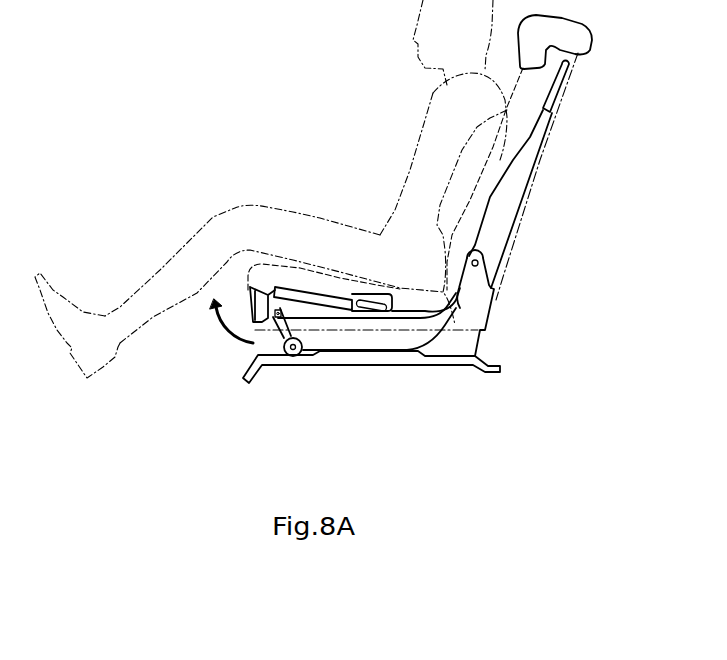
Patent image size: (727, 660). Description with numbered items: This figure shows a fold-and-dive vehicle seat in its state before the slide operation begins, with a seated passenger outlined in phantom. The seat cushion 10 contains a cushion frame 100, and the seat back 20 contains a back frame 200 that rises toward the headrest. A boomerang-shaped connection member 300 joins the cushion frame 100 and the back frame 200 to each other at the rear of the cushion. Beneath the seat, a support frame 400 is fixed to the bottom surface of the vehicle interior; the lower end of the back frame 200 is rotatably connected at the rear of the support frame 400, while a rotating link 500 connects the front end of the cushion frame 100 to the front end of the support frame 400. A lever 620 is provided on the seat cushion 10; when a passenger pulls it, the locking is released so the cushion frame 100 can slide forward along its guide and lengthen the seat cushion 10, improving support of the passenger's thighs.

The seat cushion 10 is at (350, 290).
The seat back 20 is at (570, 88).
The cushion frame 100 is at (296, 290).
The back frame 200 is at (527, 164).
The connection member 300 is at (470, 282).
The support frame 400 is at (382, 357).
The rotating link 500 is at (283, 328).
The lever 620 is at (250, 310).